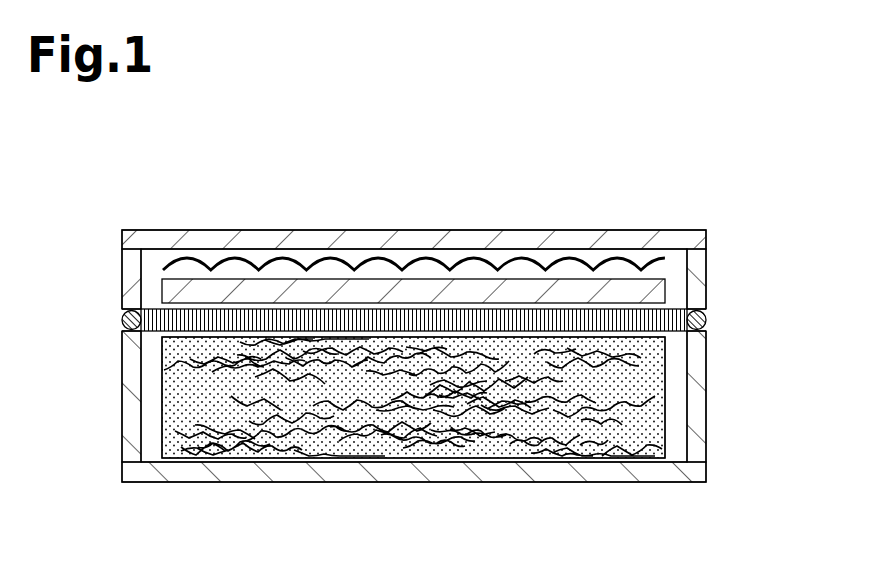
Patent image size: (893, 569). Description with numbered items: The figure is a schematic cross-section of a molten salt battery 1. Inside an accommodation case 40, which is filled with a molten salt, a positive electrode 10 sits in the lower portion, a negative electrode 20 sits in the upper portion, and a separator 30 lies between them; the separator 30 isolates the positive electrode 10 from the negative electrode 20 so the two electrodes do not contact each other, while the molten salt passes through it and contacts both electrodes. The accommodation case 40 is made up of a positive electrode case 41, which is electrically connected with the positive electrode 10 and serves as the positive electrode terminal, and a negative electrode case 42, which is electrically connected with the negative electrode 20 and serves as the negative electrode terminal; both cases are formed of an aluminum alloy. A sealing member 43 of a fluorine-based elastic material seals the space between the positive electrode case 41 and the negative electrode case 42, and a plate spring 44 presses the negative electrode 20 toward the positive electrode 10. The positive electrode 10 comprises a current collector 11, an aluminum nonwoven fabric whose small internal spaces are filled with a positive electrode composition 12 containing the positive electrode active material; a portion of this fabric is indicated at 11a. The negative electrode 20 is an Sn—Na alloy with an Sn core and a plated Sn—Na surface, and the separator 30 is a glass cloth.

The molten salt battery 1 is at (140, 202).
The positive electrode 10 is at (665, 400).
The current collector 11 is at (519, 430).
The fiber end 11a is at (592, 442).
The positive electrode composition 12 is at (385, 445).
The negative electrode 20 is at (668, 283).
The separator 30 is at (672, 335).
The accommodation case 40 is at (62, 240).
The positive electrode case 41 is at (122, 374).
The negative electrode case 42 is at (122, 297).
The sealing member 43 is at (122, 317).
The plate spring 44 is at (163, 269).